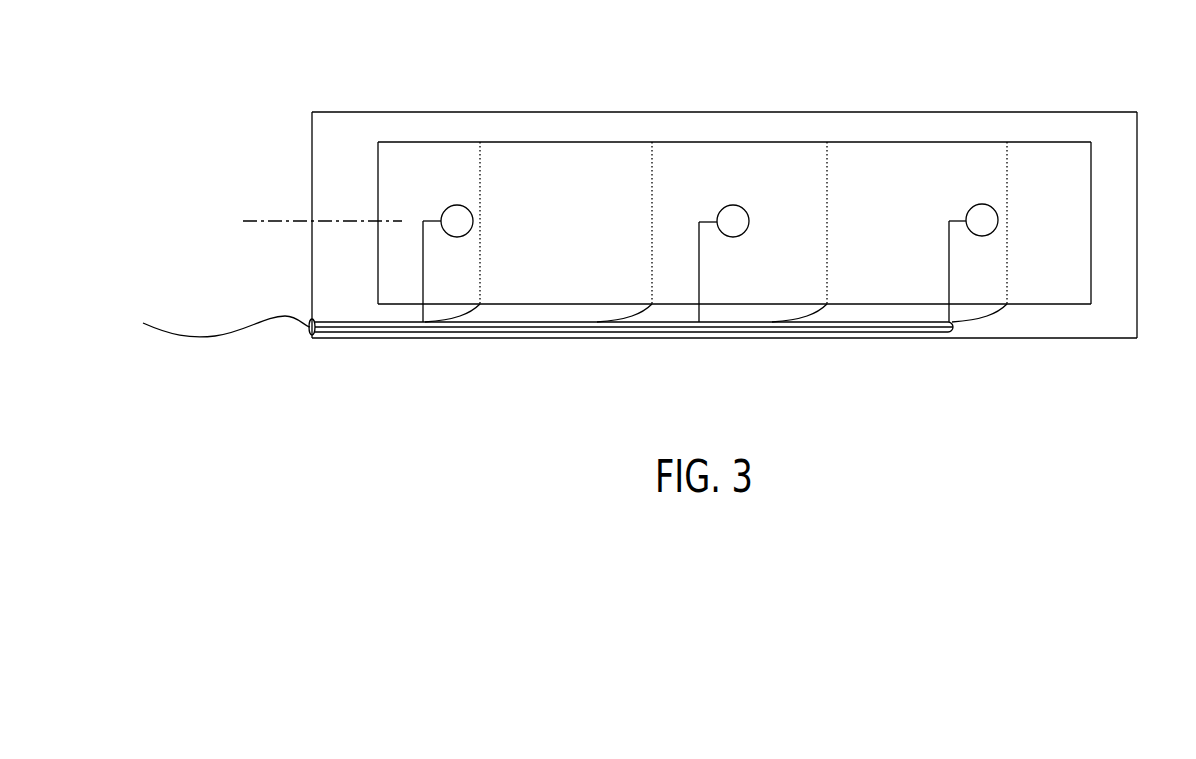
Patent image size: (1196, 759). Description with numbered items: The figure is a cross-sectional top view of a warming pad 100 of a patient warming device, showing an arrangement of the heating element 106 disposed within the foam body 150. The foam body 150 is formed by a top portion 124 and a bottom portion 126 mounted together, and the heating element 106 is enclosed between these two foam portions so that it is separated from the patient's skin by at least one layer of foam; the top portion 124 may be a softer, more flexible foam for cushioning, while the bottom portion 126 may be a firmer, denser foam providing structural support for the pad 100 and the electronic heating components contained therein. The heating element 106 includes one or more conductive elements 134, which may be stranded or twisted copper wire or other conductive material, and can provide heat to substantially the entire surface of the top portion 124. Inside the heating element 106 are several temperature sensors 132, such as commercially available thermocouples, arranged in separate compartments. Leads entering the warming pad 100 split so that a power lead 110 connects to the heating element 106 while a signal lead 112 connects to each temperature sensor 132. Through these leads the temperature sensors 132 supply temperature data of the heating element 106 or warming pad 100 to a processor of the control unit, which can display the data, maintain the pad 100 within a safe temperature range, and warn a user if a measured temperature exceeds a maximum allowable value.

The warming pad 100 is at (668, 218).
The heating element 106 is at (1070, 116).
The power lead 110 is at (482, 306).
The signal lead 112 is at (422, 219).
The top portion 124 is at (1124, 162).
The bottom portion 126 is at (1148, 350).
The temperature sensor 132 is at (473, 221).
The conductive element 134 is at (1091, 229).
The foam body 150 is at (861, 111).